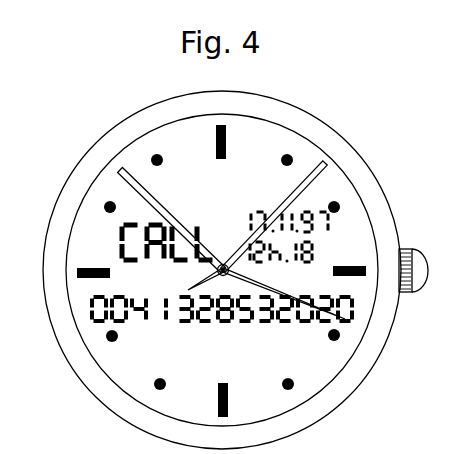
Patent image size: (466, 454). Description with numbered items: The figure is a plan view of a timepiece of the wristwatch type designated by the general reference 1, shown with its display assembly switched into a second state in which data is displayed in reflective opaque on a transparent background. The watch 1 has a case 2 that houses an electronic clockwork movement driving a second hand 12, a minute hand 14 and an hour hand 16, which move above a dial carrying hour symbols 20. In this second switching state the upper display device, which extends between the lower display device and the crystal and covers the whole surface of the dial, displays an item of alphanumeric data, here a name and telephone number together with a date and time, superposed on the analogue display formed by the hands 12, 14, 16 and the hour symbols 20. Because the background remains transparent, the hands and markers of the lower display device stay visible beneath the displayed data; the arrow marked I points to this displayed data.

The watch 1 is at (388, 136).
The case 2 is at (353, 394).
The second hand 12 is at (313, 175).
The minute hand 14 is at (126, 172).
The hour hand 16 is at (345, 319).
The hour symbols 20 is at (217, 125).
The display indication arrow I is at (82, 214).